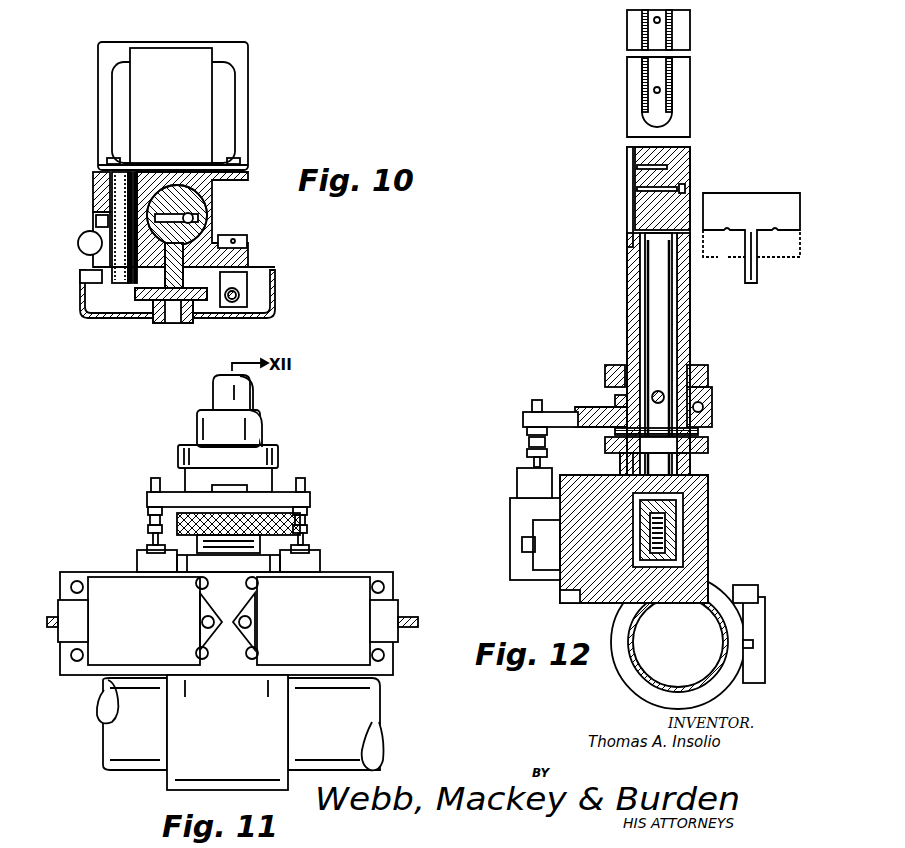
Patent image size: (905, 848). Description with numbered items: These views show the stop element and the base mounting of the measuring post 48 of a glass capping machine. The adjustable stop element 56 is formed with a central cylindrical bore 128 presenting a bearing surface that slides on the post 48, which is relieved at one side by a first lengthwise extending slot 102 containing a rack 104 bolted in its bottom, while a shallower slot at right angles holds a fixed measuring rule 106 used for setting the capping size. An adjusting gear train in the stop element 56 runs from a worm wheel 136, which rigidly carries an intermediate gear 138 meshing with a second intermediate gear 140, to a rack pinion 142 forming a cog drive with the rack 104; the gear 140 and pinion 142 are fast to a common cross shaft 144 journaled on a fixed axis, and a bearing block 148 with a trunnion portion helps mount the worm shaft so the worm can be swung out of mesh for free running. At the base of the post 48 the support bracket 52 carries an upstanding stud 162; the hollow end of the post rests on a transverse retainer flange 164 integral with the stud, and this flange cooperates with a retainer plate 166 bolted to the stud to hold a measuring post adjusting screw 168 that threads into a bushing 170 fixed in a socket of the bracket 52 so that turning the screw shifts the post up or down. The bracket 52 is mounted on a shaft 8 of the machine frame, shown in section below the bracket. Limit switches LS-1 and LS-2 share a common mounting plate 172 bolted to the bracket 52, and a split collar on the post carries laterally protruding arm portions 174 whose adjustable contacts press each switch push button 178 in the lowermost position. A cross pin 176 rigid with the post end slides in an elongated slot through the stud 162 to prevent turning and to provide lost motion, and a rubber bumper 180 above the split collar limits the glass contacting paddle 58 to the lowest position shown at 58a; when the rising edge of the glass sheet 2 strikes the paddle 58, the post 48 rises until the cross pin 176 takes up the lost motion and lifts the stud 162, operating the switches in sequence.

In FIG. 12, the sheet of glass 2 is at (745, 276).
In FIG. 11, the shaft 8 is at (365, 712).
In FIG. 12, the shaft 8 is at (633, 667).
In FIG. 10, the measuring post 48 is at (220, 204).
In FIG. 11, the measuring post 48 is at (259, 421).
In FIG. 12, the measuring post 48 is at (692, 118).
In FIG. 11, the support bracket 52 is at (167, 786).
In FIG. 12, the support bracket 52 is at (708, 539).
In FIG. 10, the adjustable stop element 56 is at (313, 313).
In FIG. 12, the glass contacting paddle 58 is at (747, 194).
In FIG. 12, the lowest paddle position 58a is at (776, 259).
In FIG. 10, the first lengthwise extending slot 102 is at (150, 213).
In FIG. 12, the first lengthwise extending slot 102 is at (630, 179).
In FIG. 10, the rack 104 is at (210, 197).
In FIG. 12, the rack 104 is at (637, 210).
In FIG. 10, the fixed measuring rule 106 is at (200, 219).
In FIG. 12, the fixed measuring rule 106 is at (660, 80).
In FIG. 10, the central cylindrical bore 128 is at (142, 212).
In FIG. 10, the worm wheel 136 is at (147, 302).
In FIG. 10, the intermediate meshing gear 138 is at (134, 289).
In FIG. 10, the intermediate meshing gear 140 is at (80, 273).
In FIG. 10, the rack pinion 142 is at (95, 223).
In FIG. 10, the cross shaft 144 is at (112, 187).
In FIG. 10, the bearing block 148 is at (240, 278).
In FIG. 11, the upstanding stud 162 is at (213, 389).
In FIG. 12, the upstanding stud 162 is at (672, 313).
In FIG. 11, the transverse retainer flange 164 is at (268, 512).
In FIG. 12, the transverse retainer flange 164 is at (700, 432).
In FIG. 12, the retainer plate 166 is at (677, 557).
In FIG. 11, the measuring post adjusting screw 168 is at (214, 556).
In FIG. 12, the measuring post adjusting screw 168 is at (710, 447).
In FIG. 12, the bushing 170 is at (692, 475).
In FIG. 11, the common mounting plate 172 is at (255, 666).
In FIG. 12, the common mounting plate 172 is at (562, 594).
In FIG. 11, the laterally protruding arm portions 174 is at (150, 498).
In FIG. 12, the laterally protruding arm portions 174 is at (549, 412).
In FIG. 12, the cross pin 176 is at (643, 398).
In FIG. 11, the switch push button 178 is at (150, 544).
In FIG. 12, the switch push button 178 is at (530, 466).
In FIG. 11, the bumper 180 is at (186, 446).
In FIG. 12, the bumper 180 is at (697, 366).
In FIG. 11, the limit switch LS-1 is at (103, 593).
In FIG. 11, the limit switch LS-2 is at (352, 593).
In FIG. 12, the limit switch LS-2 is at (527, 509).